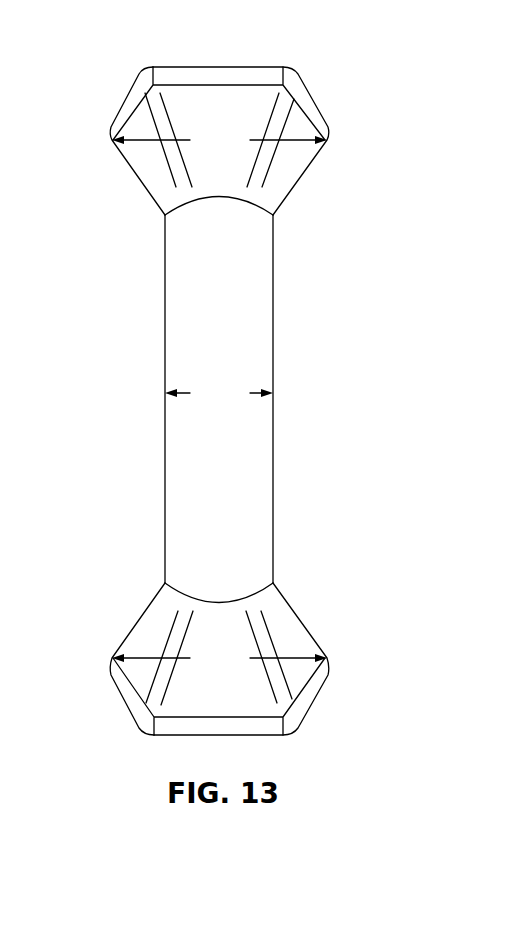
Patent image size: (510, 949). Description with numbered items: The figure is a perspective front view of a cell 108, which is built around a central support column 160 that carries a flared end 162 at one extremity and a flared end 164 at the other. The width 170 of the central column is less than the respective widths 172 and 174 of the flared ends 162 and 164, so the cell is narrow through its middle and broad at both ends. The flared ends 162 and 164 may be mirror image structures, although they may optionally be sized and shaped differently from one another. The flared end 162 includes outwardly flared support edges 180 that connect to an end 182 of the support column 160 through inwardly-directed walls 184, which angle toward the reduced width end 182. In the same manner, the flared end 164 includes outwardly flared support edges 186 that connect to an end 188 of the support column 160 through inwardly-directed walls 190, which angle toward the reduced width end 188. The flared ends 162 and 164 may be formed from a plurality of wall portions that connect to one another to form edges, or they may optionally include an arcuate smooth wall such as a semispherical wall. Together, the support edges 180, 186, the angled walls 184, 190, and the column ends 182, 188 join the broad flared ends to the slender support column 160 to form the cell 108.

The cell 108 is at (314, 296).
The support column 160 is at (268, 354).
The flared end 162 is at (221, 139).
The flared end 164 is at (222, 658).
The width 170 is at (219, 393).
The width 172 is at (340, 105).
The width 174 is at (340, 627).
The outwardly flared support edges 180 is at (297, 80).
The end 182 is at (247, 201).
The inwardly-directed walls 184 is at (140, 167).
The outwardly flared support edges 186 is at (301, 699).
The end 188 is at (247, 605).
The inwardly-directed walls 190 is at (140, 633).